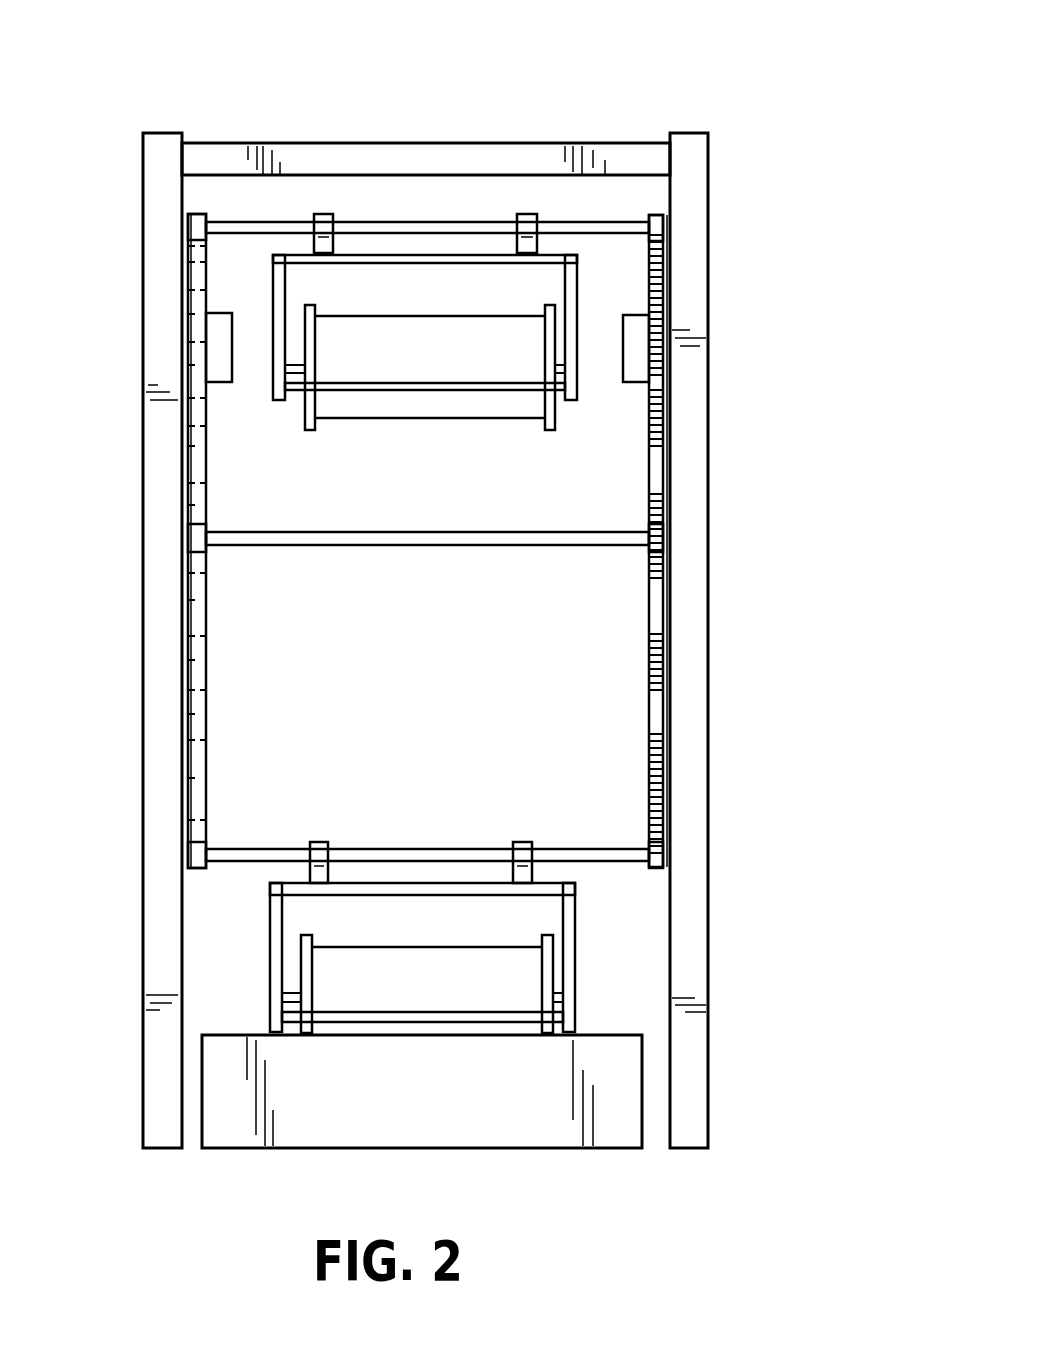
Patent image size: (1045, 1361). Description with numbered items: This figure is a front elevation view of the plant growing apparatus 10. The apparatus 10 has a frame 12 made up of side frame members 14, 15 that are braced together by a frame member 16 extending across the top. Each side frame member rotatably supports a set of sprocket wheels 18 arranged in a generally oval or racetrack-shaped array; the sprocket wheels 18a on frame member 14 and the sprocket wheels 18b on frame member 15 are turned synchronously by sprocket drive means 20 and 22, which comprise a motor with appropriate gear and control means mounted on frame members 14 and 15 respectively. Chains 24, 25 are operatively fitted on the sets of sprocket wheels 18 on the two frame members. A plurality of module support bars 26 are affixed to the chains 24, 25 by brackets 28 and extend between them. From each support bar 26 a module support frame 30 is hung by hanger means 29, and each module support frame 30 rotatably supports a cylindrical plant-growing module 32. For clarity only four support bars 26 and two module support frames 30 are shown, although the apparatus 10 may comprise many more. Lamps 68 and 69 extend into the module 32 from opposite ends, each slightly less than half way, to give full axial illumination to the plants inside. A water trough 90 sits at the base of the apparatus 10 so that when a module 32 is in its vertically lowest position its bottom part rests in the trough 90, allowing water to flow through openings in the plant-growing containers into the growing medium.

The plant growing apparatus 10 is at (634, 54).
The frame 12 is at (192, 126).
The side frame member 14 is at (690, 598).
The side frame member 15 is at (165, 555).
The frame member 16 is at (398, 155).
The sprocket wheels 18 is at (195, 648).
The sprocket wheels 18a is at (660, 268).
The sprocket wheels 18b is at (195, 270).
The sprocket drive means 20 is at (632, 318).
The sprocket drive means 22 is at (220, 326).
The chain 24 is at (660, 470).
The chain 25 is at (196, 463).
The module support bar 26 is at (492, 532).
The bracket 28 is at (193, 220).
The hanger means 29 is at (526, 216).
The module support frame 30 is at (424, 428).
The cylindrical plant-growing module 32 is at (447, 367).
The lamp 68 is at (293, 362).
The lamp 69 is at (558, 360).
The water trough 90 is at (610, 1087).